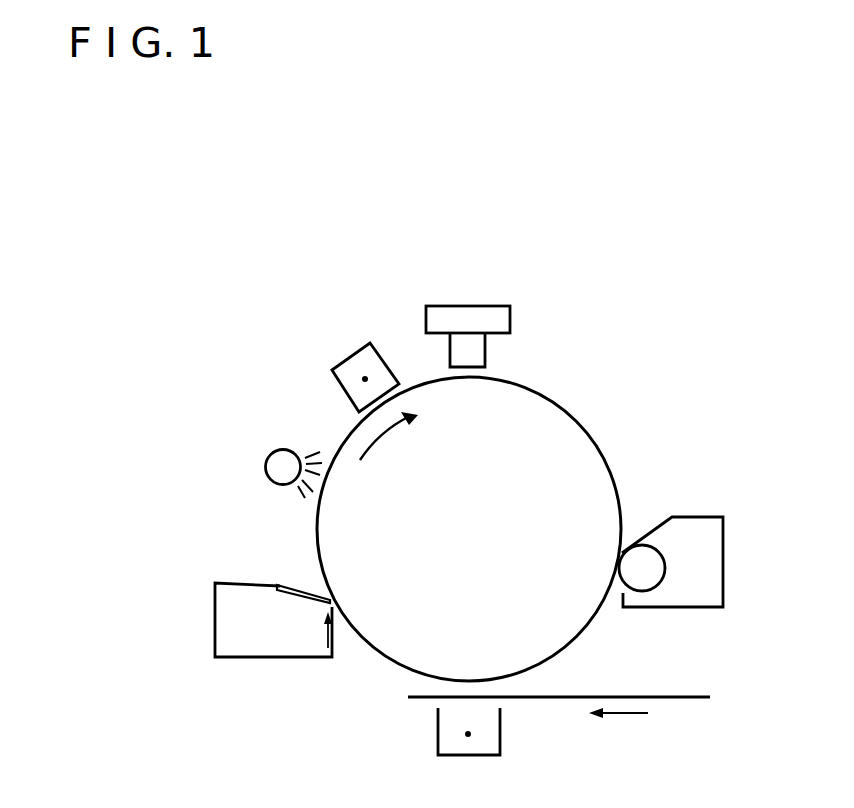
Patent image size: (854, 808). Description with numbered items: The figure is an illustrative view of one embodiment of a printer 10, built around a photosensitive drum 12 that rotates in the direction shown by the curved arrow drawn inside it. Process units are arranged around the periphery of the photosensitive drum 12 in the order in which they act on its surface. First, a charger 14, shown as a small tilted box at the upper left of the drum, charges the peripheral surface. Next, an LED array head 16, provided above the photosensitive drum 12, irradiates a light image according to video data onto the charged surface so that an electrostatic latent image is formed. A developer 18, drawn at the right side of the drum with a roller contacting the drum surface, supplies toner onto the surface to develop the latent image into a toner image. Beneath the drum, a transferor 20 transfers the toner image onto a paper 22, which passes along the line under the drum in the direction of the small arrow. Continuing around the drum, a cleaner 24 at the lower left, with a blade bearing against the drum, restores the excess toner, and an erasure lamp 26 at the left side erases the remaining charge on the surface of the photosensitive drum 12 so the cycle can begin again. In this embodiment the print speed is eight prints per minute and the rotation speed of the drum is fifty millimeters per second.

The printer 10 is at (222, 285).
The photosensitive drum 12 is at (569, 432).
The charger 14 is at (358, 349).
The LED array head 16 is at (482, 307).
The developer 18 is at (722, 545).
The transferor 20 is at (500, 745).
The paper 22 is at (669, 700).
The cleaner 24 is at (241, 582).
The erasure lamp 26 is at (268, 453).